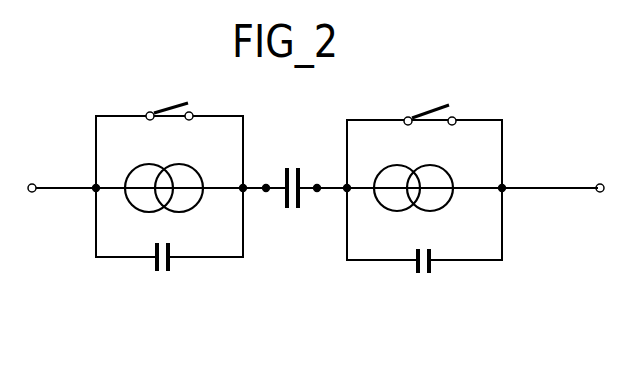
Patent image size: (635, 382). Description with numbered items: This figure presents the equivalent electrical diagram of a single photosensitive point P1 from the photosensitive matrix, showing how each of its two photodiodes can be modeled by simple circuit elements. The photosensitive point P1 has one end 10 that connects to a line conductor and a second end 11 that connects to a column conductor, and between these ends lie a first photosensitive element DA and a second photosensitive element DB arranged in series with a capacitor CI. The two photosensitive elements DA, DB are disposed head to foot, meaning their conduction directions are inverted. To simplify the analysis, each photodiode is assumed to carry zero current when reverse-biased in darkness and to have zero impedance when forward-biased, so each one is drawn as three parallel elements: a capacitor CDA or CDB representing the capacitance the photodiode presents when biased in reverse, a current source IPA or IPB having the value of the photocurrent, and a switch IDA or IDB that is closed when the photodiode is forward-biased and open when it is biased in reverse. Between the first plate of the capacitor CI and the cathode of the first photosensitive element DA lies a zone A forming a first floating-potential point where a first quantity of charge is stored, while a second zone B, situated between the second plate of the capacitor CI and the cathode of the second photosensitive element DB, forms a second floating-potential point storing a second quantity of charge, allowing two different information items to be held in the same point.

The end 10 is at (33, 182).
The second end 11 is at (603, 182).
The first photosensitive element DA is at (131, 195).
The second photosensitive element DB is at (484, 194).
The switch IDA is at (164, 106).
The switch IDB is at (427, 107).
The current source IPA is at (162, 213).
The current source IPB is at (432, 212).
The capacitor CDA is at (165, 274).
The capacitor CDB is at (426, 276).
The capacitor CI is at (288, 164).
The zone A is at (266, 193).
The second zone B is at (317, 193).
The photosensitive point P1 is at (154, 317).